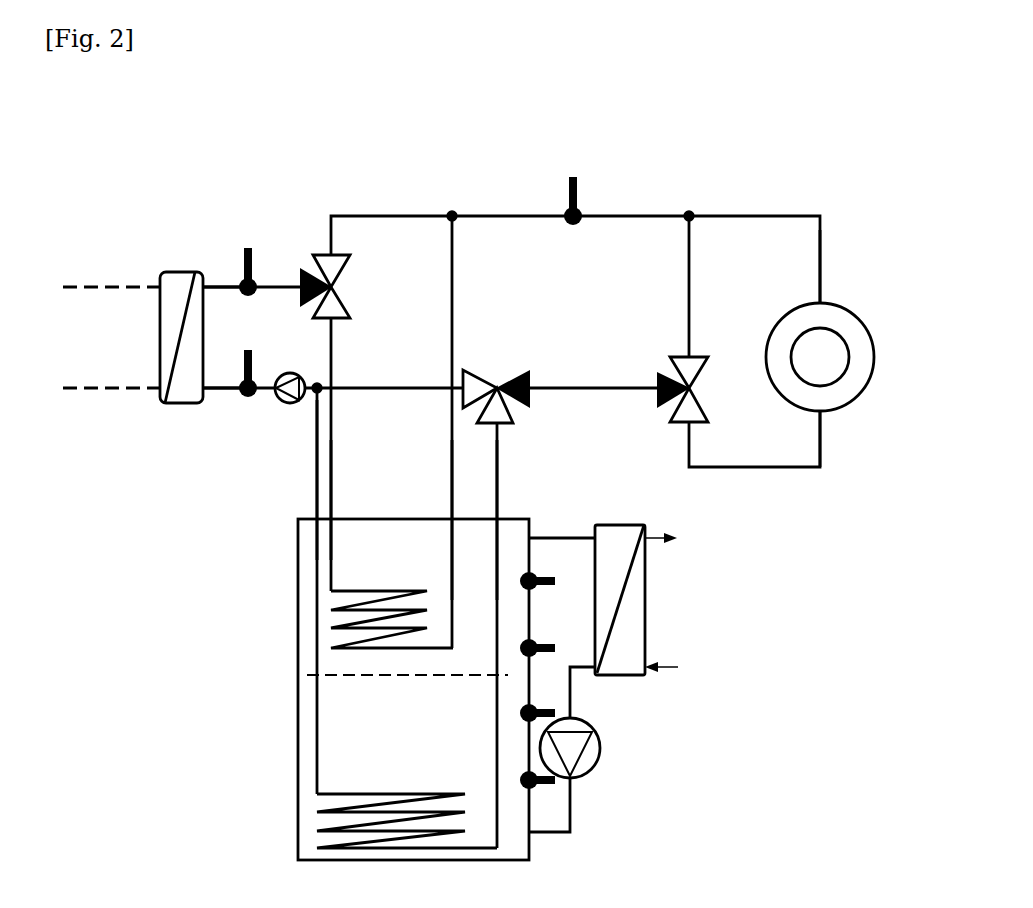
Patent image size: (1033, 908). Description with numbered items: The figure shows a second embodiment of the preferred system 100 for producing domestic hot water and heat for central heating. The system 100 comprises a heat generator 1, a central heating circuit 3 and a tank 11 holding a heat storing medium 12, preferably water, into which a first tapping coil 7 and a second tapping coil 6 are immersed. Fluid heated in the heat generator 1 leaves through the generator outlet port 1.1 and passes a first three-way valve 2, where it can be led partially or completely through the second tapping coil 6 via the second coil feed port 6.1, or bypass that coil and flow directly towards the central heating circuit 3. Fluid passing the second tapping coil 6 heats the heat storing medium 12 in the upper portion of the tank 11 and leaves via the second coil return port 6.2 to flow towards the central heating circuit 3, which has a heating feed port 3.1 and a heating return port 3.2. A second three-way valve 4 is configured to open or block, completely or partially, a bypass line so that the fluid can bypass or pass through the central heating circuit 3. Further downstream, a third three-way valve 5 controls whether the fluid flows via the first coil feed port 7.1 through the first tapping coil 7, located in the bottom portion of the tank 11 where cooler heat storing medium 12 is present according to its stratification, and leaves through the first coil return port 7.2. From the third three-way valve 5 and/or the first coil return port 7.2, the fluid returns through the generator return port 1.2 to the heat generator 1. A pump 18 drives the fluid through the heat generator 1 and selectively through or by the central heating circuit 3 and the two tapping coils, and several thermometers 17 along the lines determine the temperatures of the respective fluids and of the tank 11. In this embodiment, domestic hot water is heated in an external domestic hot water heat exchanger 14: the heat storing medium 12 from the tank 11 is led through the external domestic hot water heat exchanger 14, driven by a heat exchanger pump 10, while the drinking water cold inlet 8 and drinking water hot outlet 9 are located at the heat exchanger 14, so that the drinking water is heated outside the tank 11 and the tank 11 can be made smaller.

The system 100 is at (172, 667).
The heat generator 1 is at (178, 272).
The generator outlet port 1.1 is at (220, 286).
The generator return port 1.2 is at (207, 403).
The first three-way valve 2 is at (317, 252).
The central heating circuit 3 is at (852, 310).
The heating feed port 3.1 is at (820, 275).
The heating return port 3.2 is at (820, 440).
The second three-way valve 4 is at (672, 360).
The third three-way valve 5 is at (503, 383).
The second tapping coil 6 is at (337, 577).
The second coil feed port 6.1 is at (333, 500).
The second coil return port 6.2 is at (452, 500).
The first tapping coil 7 is at (335, 777).
The first coil feed port 7.1 is at (497, 482).
The first coil return port 7.2 is at (310, 450).
The drinking water cold inlet 8 is at (662, 665).
The drinking water hot outlet 9 is at (665, 540).
The heat exchanger pump 10 is at (600, 755).
The tank 11 is at (298, 718).
The heat storing medium 12 is at (322, 703).
The external domestic hot water heat exchanger 14 is at (618, 525).
The thermometers 17 is at (253, 357).
The pump 18 is at (280, 403).